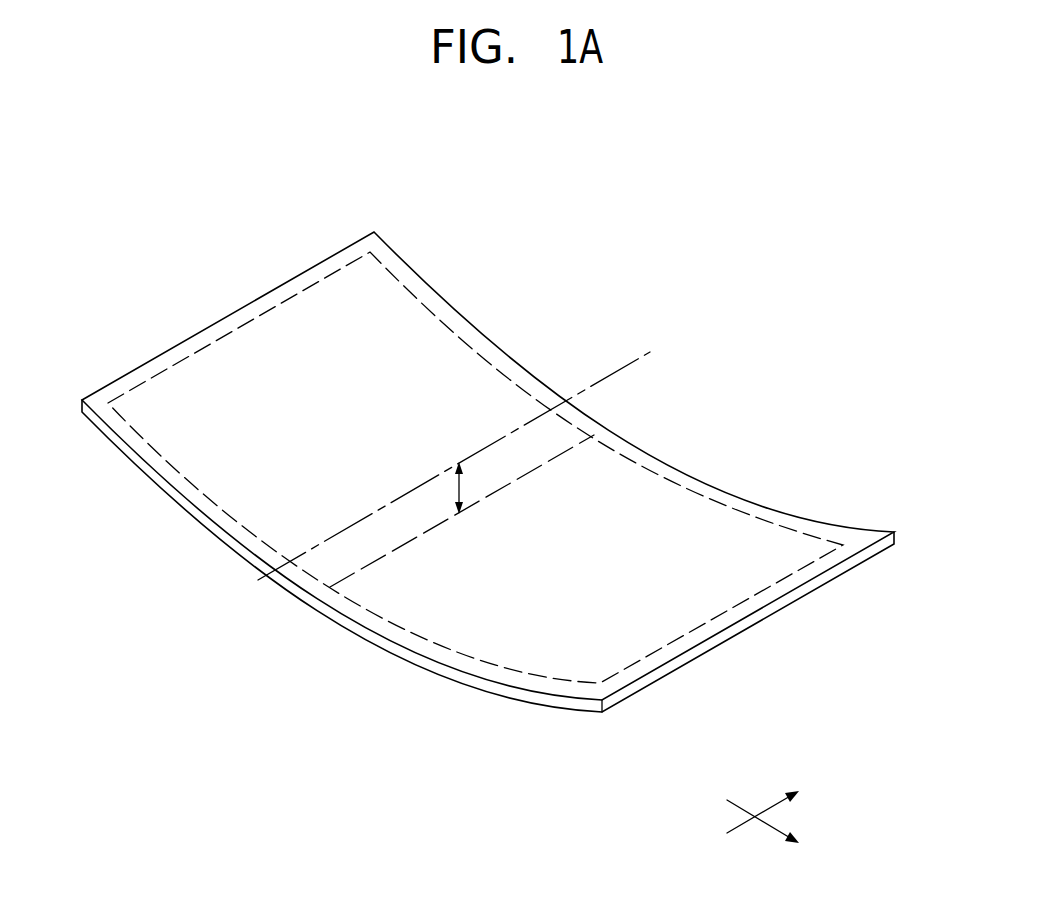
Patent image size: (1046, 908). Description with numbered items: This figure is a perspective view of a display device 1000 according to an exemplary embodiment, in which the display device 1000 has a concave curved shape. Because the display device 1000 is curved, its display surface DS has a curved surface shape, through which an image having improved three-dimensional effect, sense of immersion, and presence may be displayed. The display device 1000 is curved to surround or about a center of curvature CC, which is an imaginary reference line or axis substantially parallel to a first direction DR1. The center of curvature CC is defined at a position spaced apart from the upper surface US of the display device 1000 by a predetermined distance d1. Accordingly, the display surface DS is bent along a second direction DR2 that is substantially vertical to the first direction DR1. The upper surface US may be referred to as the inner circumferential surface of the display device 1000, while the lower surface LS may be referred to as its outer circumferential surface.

The display device 1000 is at (498, 431).
The upper surface US is at (866, 538).
The lower surface LS is at (498, 556).
The display surface DS is at (690, 495).
The center of curvature CC is at (638, 352).
The predetermined distance d1 is at (458, 493).
The first direction DR1 is at (783, 799).
The second direction DR2 is at (783, 834).